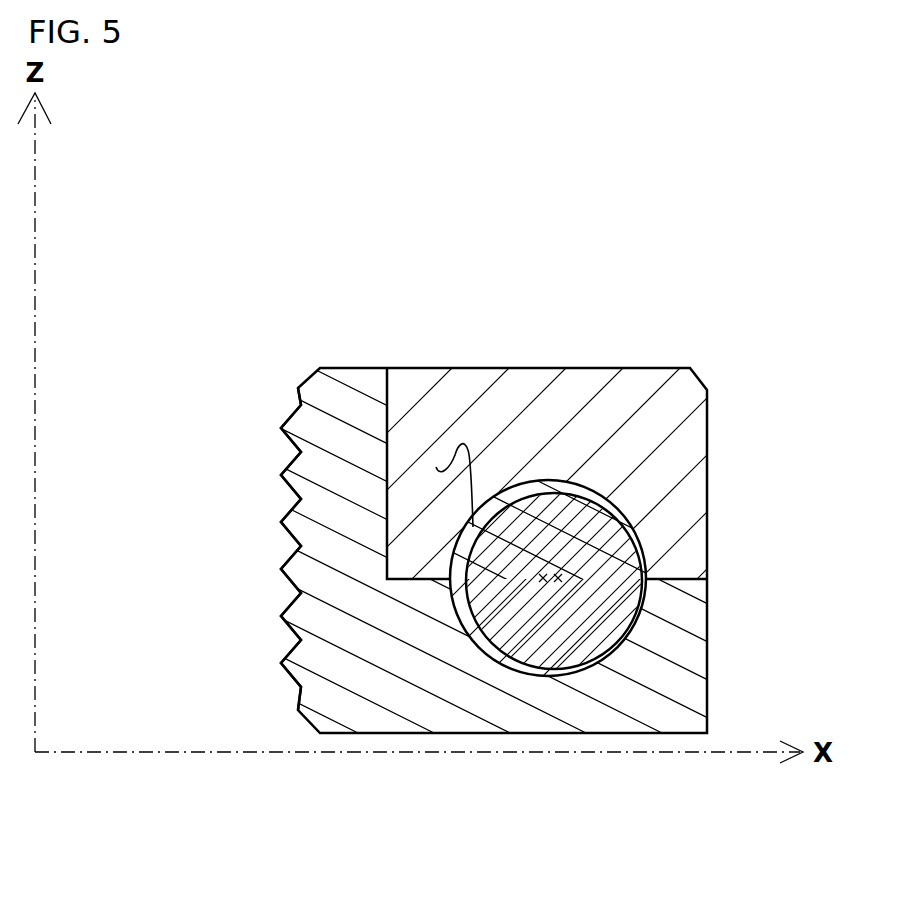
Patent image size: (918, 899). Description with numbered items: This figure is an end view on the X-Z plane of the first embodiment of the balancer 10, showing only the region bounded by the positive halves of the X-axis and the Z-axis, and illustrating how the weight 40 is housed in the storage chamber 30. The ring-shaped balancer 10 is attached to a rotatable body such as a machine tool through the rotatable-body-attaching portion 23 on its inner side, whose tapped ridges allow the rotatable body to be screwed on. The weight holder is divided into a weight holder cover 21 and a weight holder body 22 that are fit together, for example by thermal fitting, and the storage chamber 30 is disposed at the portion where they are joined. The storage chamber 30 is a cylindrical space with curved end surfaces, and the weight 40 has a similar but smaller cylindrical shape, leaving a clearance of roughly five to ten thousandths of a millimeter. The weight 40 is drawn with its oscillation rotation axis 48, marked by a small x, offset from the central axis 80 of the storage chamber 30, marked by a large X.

The balancer 10 is at (494, 500).
The weight holder cover 21 is at (505, 432).
The weight holder body 22 is at (362, 645).
The rotatable-body-attaching portion 23 is at (283, 462).
The storage chamber 30 is at (437, 468).
The weight 40 is at (595, 622).
The oscillation rotation axis 48 is at (563, 583).
The central axis 80 is at (542, 576).